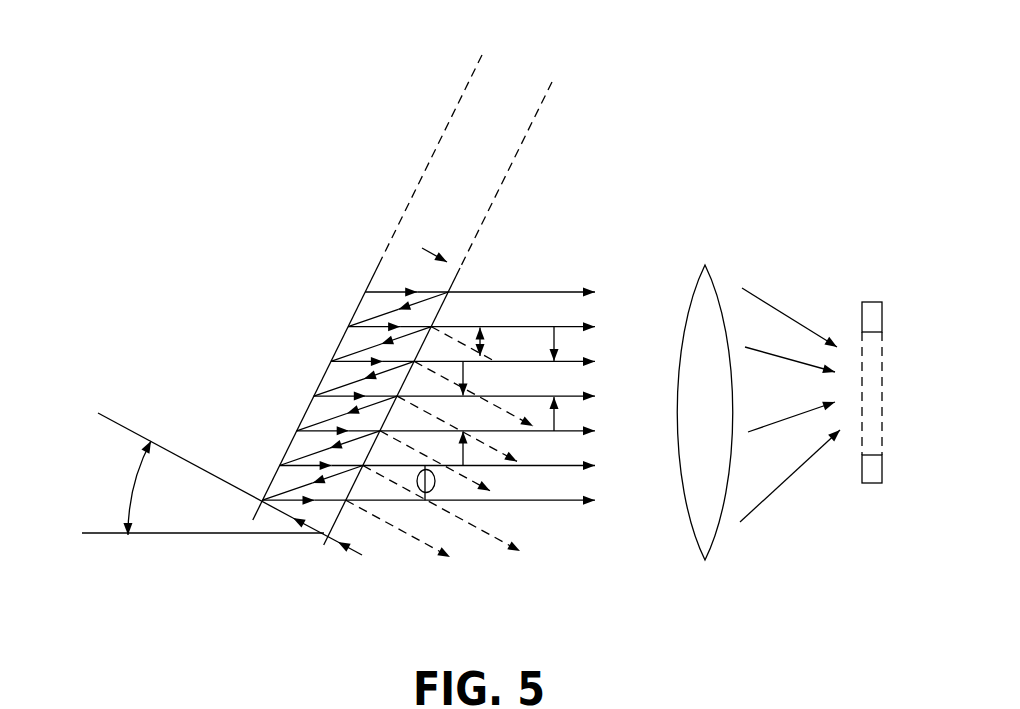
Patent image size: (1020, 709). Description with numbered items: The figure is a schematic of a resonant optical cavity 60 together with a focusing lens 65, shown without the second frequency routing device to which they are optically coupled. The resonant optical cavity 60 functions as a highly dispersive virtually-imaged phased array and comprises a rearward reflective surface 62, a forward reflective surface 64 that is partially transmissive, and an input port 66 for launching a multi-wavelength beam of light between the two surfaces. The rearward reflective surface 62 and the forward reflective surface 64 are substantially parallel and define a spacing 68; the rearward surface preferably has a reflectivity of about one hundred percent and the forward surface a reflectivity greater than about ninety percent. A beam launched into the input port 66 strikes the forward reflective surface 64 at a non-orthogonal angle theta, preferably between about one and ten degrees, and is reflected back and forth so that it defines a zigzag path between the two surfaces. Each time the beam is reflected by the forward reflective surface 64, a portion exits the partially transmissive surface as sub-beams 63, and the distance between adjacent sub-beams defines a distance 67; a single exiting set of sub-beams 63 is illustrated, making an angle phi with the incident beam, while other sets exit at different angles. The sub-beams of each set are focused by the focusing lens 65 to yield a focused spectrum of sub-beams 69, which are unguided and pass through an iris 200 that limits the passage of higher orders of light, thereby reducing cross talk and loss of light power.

The resonant optical cavity 60 is at (411, 295).
The rearward reflective surface 62 is at (341, 340).
The forward reflective surface 64 is at (458, 273).
The input port 66 is at (252, 535).
The spacing 68 is at (431, 46).
The sub-beams 63 is at (582, 515).
The distance 67 is at (509, 396).
The focusing lens 65 is at (707, 265).
The iris 200 is at (870, 302).
The focused spectrum of sub-beams 69 is at (832, 475).